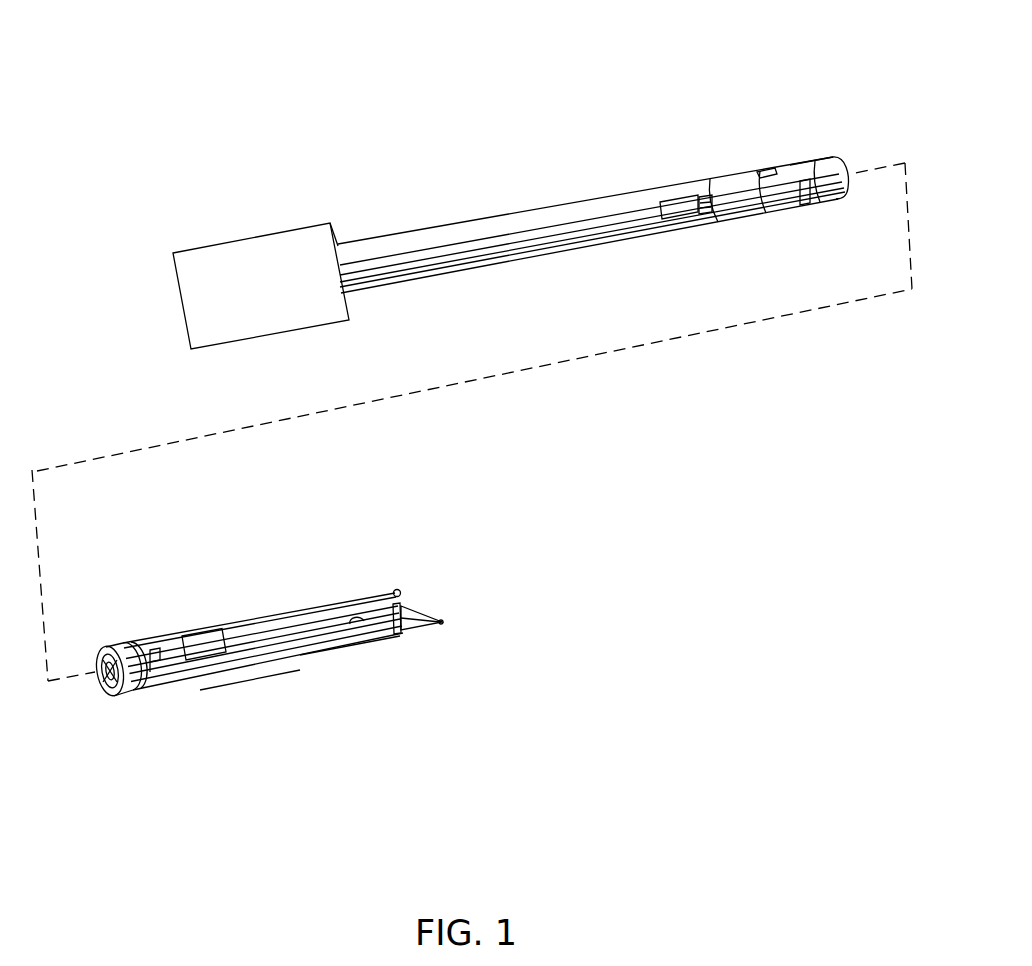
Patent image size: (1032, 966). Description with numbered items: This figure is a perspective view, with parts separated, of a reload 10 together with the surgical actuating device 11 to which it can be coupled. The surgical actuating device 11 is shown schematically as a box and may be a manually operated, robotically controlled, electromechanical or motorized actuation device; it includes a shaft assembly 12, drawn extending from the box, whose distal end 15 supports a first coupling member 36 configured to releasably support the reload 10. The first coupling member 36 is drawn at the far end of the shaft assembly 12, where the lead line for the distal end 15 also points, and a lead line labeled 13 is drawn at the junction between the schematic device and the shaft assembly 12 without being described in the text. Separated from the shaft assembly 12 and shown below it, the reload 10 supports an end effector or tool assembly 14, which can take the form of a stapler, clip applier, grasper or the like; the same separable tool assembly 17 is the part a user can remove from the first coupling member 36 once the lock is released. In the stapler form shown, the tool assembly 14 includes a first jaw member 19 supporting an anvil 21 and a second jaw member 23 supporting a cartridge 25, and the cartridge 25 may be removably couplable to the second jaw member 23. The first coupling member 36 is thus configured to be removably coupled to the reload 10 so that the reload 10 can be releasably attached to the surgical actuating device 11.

The reload 10 is at (183, 732).
The surgical actuating device 11 is at (200, 262).
The shaft assembly 12 is at (616, 151).
The strain relief / connector 13 is at (338, 246).
The tool assembly 14 is at (268, 613).
The distal end 15 is at (762, 167).
The tool assembly 17 is at (268, 693).
The first jaw member 19 is at (388, 594).
The anvil 21 is at (397, 603).
The second jaw member 23 is at (375, 640).
The cartridge 25 is at (413, 613).
The first coupling member 36 is at (785, 162).